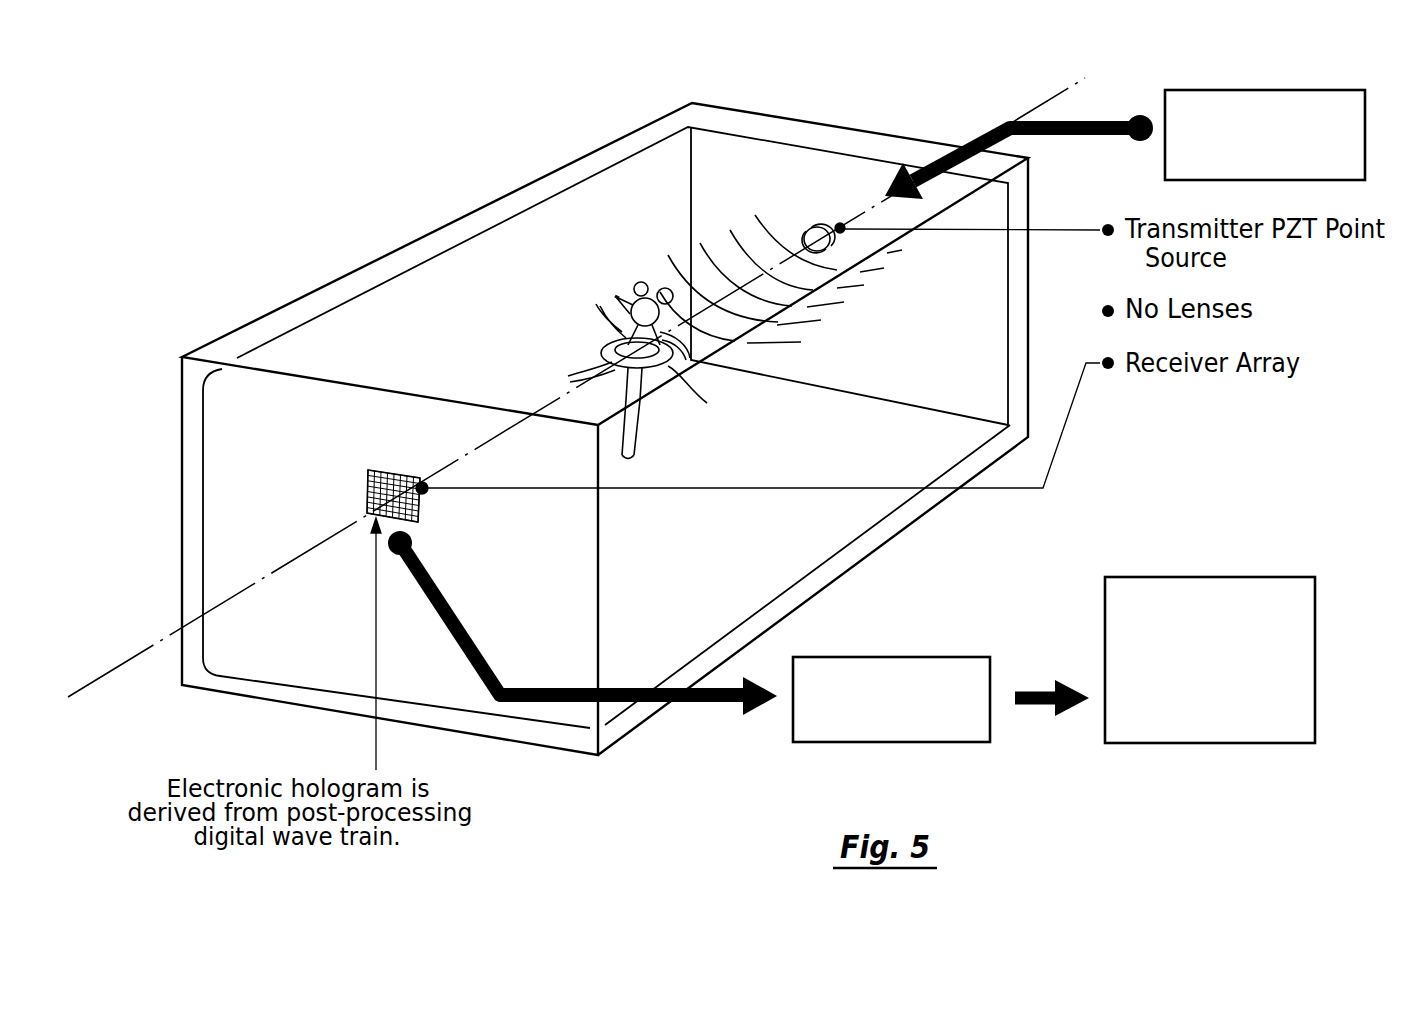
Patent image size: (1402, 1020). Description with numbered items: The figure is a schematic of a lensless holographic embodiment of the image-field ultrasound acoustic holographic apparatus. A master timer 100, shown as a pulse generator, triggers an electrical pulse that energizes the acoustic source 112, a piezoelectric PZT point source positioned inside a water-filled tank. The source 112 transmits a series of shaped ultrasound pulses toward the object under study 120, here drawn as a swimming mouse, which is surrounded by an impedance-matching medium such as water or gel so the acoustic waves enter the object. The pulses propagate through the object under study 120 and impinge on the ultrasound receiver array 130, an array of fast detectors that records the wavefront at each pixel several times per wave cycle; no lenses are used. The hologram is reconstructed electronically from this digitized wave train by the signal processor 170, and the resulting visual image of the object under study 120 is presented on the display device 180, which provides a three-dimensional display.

The master timer 100 is at (1262, 90).
The acoustic source 112 is at (820, 224).
The object under study 120 is at (625, 283).
The ultrasound receiver array 130 is at (413, 508).
The signal processor 170 is at (920, 657).
The display device 180 is at (1219, 577).